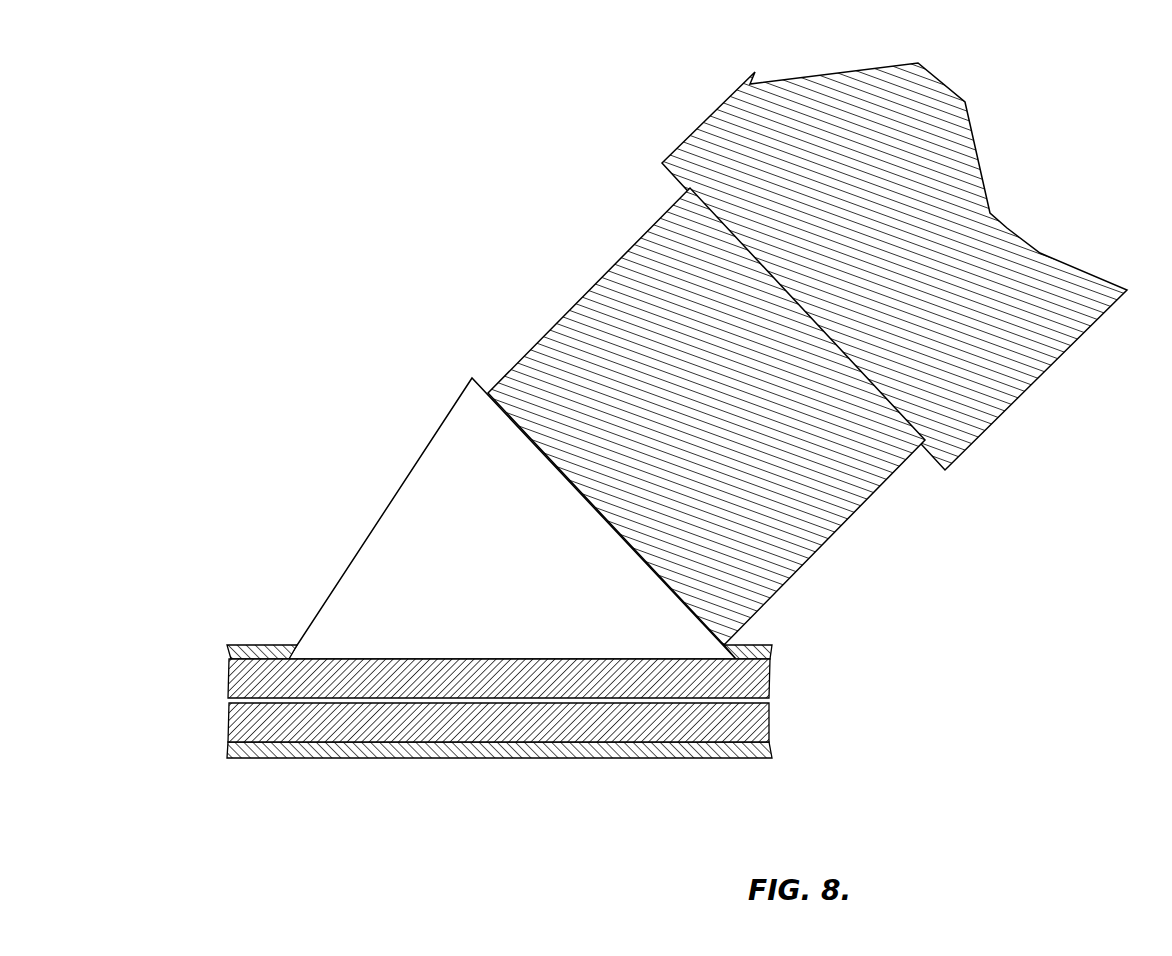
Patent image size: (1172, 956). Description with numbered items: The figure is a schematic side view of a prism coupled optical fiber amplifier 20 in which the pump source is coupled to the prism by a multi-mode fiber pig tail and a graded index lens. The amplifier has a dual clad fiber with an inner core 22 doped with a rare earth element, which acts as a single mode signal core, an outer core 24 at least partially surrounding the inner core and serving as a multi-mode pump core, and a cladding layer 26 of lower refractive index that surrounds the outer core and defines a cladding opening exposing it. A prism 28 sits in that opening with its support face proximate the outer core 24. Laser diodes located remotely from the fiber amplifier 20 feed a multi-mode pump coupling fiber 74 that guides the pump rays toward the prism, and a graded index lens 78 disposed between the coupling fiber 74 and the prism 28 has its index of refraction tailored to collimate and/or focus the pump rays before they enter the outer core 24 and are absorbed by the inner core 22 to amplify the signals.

The prism coupled optical fiber amplifier 20 is at (446, 725).
The inner core 22 is at (508, 703).
The outer core 24 is at (418, 727).
The cladding layer 26 is at (332, 753).
The prism 28 is at (393, 495).
The multi-mode pump coupling fiber 74 is at (713, 110).
The graded index lens 78 is at (860, 508).